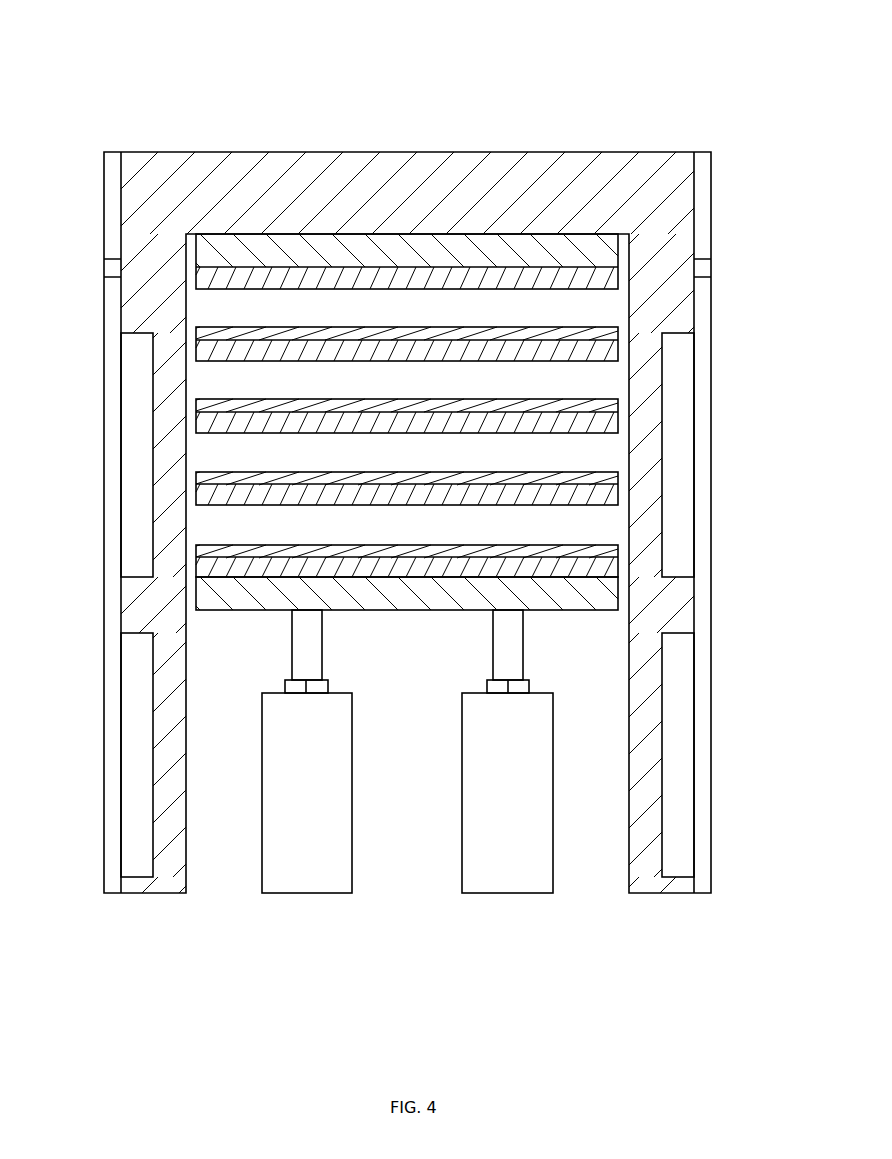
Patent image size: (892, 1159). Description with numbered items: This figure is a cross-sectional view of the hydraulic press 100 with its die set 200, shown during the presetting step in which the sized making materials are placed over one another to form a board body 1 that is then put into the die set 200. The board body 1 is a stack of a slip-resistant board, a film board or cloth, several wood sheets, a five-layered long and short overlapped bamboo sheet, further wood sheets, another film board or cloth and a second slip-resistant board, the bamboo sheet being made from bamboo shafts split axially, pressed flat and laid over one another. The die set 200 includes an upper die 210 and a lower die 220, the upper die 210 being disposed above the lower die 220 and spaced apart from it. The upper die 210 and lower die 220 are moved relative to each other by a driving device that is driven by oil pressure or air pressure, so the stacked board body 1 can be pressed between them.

The hydraulic press 100 is at (682, 123).
The die set 200 is at (439, 620).
The board body 1 is at (404, 405).
The upper die 210 is at (600, 495).
The lower die 220 is at (600, 568).